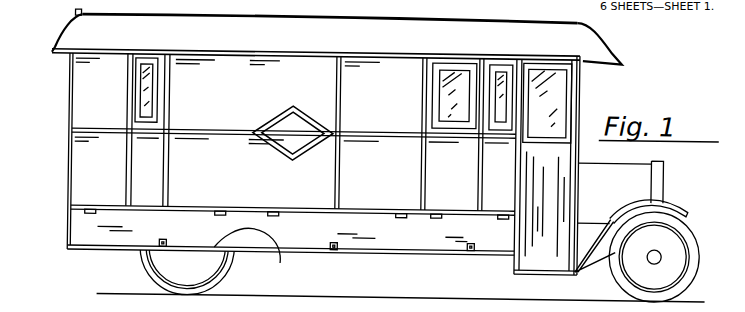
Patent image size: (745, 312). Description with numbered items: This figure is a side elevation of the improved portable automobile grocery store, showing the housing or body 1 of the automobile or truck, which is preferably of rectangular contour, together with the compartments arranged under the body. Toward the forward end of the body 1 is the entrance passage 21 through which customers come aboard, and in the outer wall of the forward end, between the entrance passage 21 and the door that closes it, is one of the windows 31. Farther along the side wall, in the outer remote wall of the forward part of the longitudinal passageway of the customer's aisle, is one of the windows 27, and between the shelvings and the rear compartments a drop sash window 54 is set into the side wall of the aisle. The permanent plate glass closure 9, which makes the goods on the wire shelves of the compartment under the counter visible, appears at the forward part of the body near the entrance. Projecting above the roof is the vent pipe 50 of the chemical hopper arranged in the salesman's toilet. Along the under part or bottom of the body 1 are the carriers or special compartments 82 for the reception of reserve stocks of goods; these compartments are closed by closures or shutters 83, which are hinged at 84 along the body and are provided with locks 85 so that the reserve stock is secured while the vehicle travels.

The housing or body 1 is at (62, 180).
The permanent plate glass closure 9 is at (555, 162).
The entrance passage 21 is at (538, 242).
The windows 27 is at (445, 67).
The windows 31 is at (500, 66).
The vent pipe 50 is at (75, 12).
The drop sash window 54 is at (140, 97).
The carriers or special compartments 82 is at (257, 256).
The closures or shutters 83 is at (117, 237).
The hinges 84 is at (275, 207).
The locks 85 is at (337, 247).